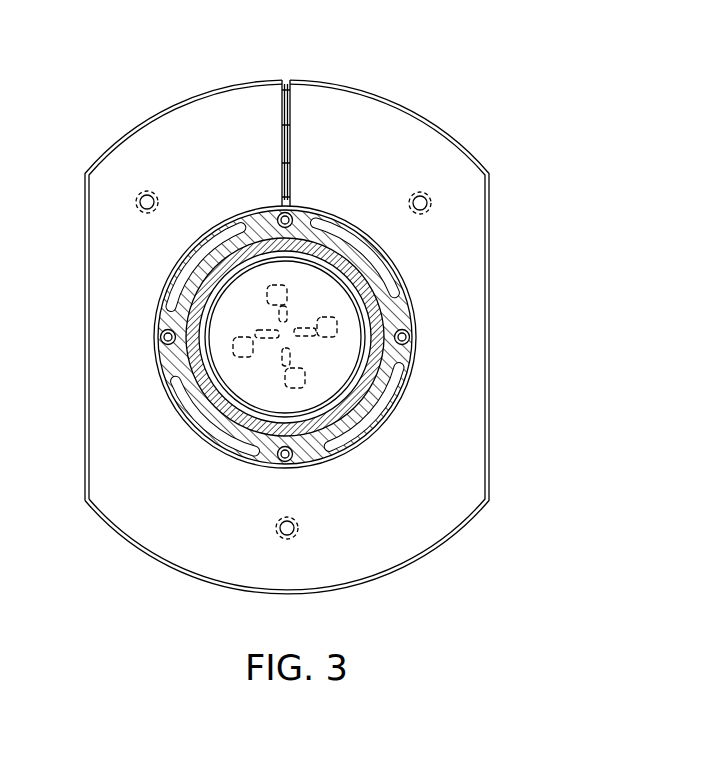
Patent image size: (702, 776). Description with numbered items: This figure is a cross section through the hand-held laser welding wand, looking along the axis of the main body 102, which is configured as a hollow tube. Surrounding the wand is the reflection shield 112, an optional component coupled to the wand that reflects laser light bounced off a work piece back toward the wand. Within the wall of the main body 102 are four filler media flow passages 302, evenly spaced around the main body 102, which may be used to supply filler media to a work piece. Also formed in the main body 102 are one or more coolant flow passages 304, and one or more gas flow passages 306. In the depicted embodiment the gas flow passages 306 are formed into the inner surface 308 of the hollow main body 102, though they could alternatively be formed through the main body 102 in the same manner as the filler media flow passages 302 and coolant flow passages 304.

The reflection shield 112 is at (373, 106).
The main body 102 is at (409, 291).
The filler media flow passages 302 is at (289, 215).
The coolant flow passages 304 is at (197, 262).
The gas flow passages 306 is at (217, 262).
The inner surface 308 is at (272, 258).